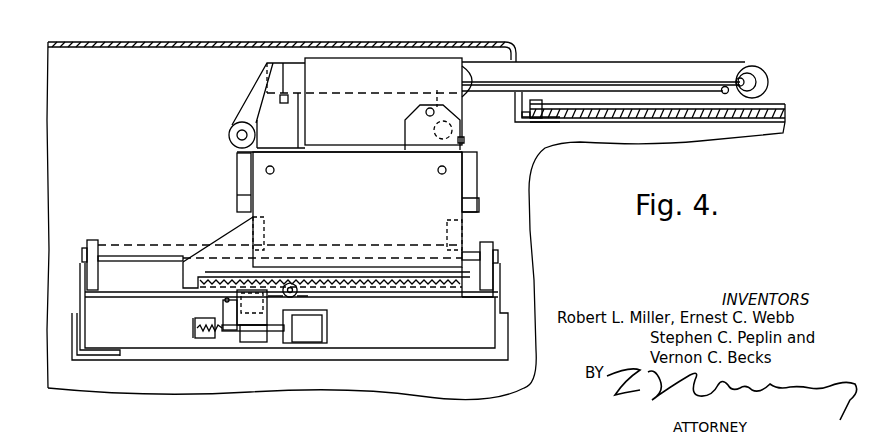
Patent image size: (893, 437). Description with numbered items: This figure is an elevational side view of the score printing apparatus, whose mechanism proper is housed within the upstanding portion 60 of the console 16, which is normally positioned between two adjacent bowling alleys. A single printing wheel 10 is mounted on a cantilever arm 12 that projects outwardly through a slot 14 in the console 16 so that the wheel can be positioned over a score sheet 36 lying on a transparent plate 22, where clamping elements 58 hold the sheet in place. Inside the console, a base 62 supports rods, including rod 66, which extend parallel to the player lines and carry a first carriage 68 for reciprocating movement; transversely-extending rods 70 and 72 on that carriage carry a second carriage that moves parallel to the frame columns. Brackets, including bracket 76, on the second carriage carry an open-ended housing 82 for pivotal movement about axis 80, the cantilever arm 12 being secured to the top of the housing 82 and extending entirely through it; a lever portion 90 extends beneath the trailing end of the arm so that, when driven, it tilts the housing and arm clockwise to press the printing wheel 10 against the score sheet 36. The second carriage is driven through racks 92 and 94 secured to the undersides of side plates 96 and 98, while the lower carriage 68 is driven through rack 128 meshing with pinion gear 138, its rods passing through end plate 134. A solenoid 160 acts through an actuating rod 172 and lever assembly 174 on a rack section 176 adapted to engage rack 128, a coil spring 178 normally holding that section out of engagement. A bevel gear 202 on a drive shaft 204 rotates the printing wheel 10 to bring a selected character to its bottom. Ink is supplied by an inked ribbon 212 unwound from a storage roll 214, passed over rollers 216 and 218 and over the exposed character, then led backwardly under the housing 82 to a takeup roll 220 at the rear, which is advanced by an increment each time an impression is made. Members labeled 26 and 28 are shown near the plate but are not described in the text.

The printing wheel 10 is at (757, 104).
The cantilever arm 12 is at (618, 62).
The slot 14 is at (518, 60).
The console 16 is at (410, 393).
The transparent plate 22 is at (675, 122).
The stop 26 is at (519, 121).
The bracket 28 is at (552, 120).
The score sheet 36 is at (612, 122).
The clamping elements 58 is at (516, 103).
The upstanding portion 60 is at (181, 42).
The base 62 is at (417, 341).
The rod 66 is at (150, 252).
The first carriage 68 is at (360, 226).
The transversely-extending rod 70 is at (270, 174).
The transversely-extending rod 72 is at (442, 174).
The bracket 76 is at (413, 131).
The pivotal axis 80 is at (426, 110).
The open-ended housing 82 is at (392, 58).
The lever portion 90 is at (284, 103).
The rack 92 is at (479, 206).
The rack 94 is at (237, 204).
The side plate 96 is at (475, 171).
The side plate 98 is at (237, 171).
The rack 128 is at (398, 285).
The end plate 134 is at (250, 226).
The pinion gear 138 is at (296, 297).
The solenoid 160 is at (310, 340).
The actuating rod 172 is at (250, 342).
The lever assembly 174 is at (223, 308).
The rack section 176 is at (251, 291).
The coil spring 178 is at (208, 338).
The bevel gear 202 is at (748, 65).
The drive shaft 204 is at (643, 82).
The inked ribbon 212 is at (261, 74).
The storage roll 214 is at (466, 141).
The roller 216 is at (437, 90).
The roller 218 is at (727, 87).
The takeup roll 220 is at (229, 134).